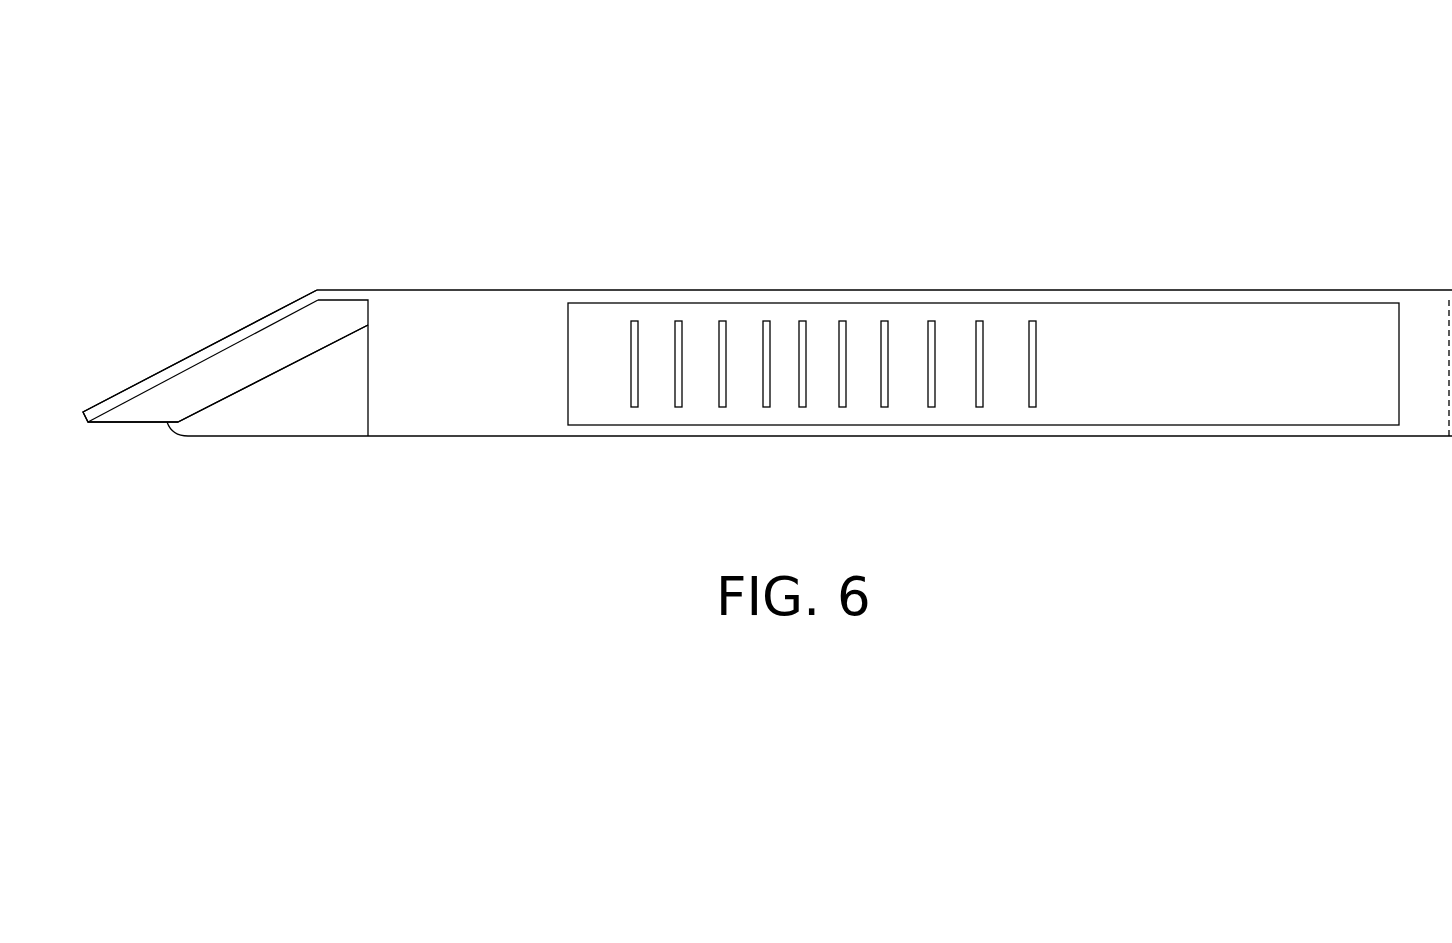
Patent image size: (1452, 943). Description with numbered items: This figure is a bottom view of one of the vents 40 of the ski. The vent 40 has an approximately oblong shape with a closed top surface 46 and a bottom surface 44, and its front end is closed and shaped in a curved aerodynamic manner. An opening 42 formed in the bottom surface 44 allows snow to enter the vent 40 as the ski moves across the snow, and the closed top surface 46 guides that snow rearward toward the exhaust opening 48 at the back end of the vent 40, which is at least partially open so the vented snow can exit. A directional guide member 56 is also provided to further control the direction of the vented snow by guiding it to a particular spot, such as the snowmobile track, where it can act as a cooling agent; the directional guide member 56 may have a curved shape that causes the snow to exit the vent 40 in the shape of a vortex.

The vent 40 is at (767, 276).
The opening 42 is at (884, 402).
The bottom surface 44 is at (472, 413).
The top surface 46 is at (823, 337).
The exhaust opening 48 is at (335, 373).
The directional guide member 56 is at (225, 342).